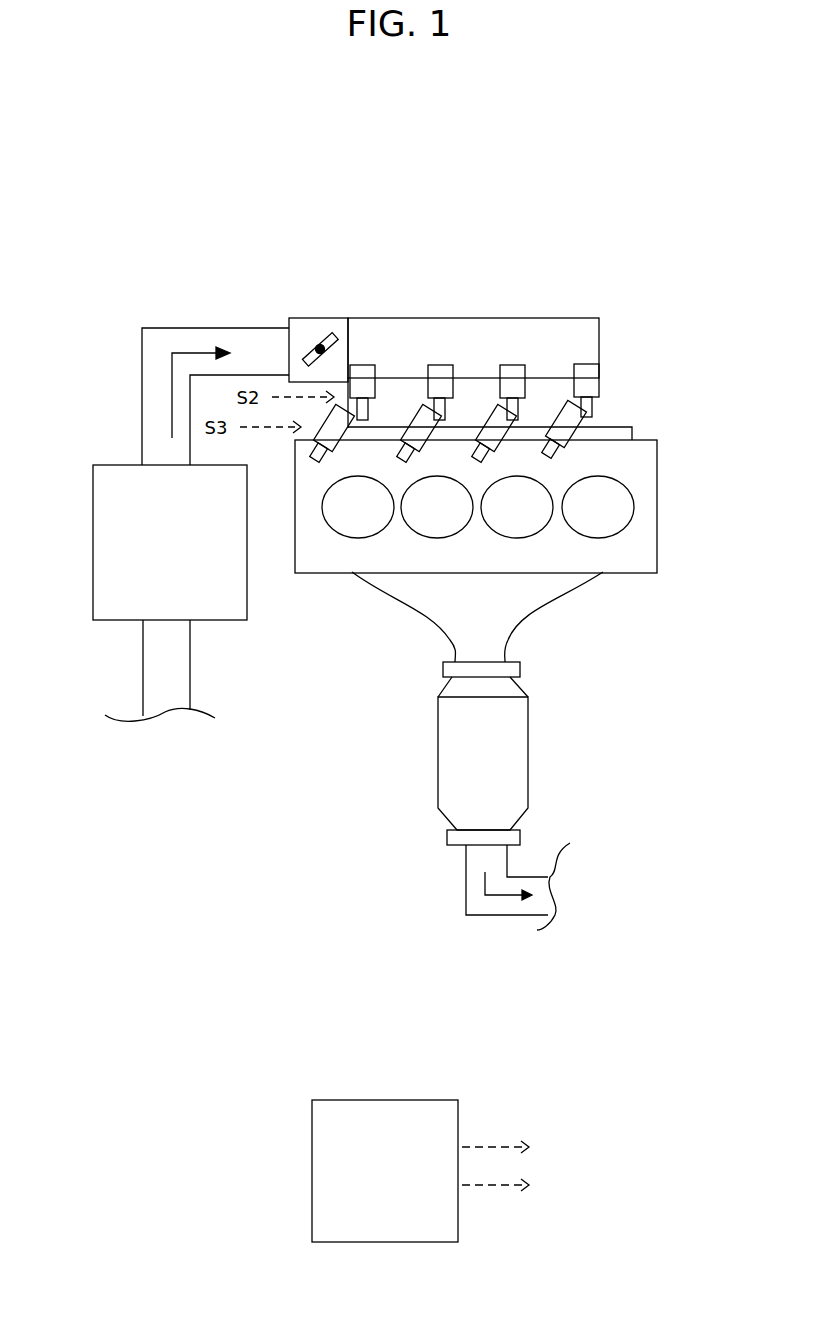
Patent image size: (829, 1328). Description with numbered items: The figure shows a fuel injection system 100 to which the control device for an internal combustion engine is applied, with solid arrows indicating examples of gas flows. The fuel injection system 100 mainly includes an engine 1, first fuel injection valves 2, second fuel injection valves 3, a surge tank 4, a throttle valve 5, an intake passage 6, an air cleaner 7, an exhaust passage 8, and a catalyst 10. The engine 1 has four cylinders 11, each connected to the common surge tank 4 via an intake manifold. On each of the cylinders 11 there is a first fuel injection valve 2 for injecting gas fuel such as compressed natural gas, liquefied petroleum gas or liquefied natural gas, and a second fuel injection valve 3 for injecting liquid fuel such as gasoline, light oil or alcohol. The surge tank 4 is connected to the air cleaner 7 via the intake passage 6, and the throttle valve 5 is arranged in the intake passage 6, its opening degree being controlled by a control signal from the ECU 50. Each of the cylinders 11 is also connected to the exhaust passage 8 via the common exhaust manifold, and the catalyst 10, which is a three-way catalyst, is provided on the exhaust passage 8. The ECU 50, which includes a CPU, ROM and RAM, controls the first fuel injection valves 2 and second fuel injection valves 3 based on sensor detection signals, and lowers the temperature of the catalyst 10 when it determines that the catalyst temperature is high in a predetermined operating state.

The fuel injection system 100 is at (413, 116).
The engine 1 is at (714, 495).
The first fuel injection valve 2 is at (433, 365).
The second fuel injection valve 3 is at (560, 405).
The surge tank 4 is at (452, 330).
The throttle valve 5 is at (313, 328).
The intake passage 6 is at (222, 337).
The air cleaner 7 is at (108, 487).
The exhaust passage 8 is at (472, 895).
The catalyst 10 is at (455, 755).
The cylinder 11 is at (443, 515).
The ECU 50 is at (387, 1100).